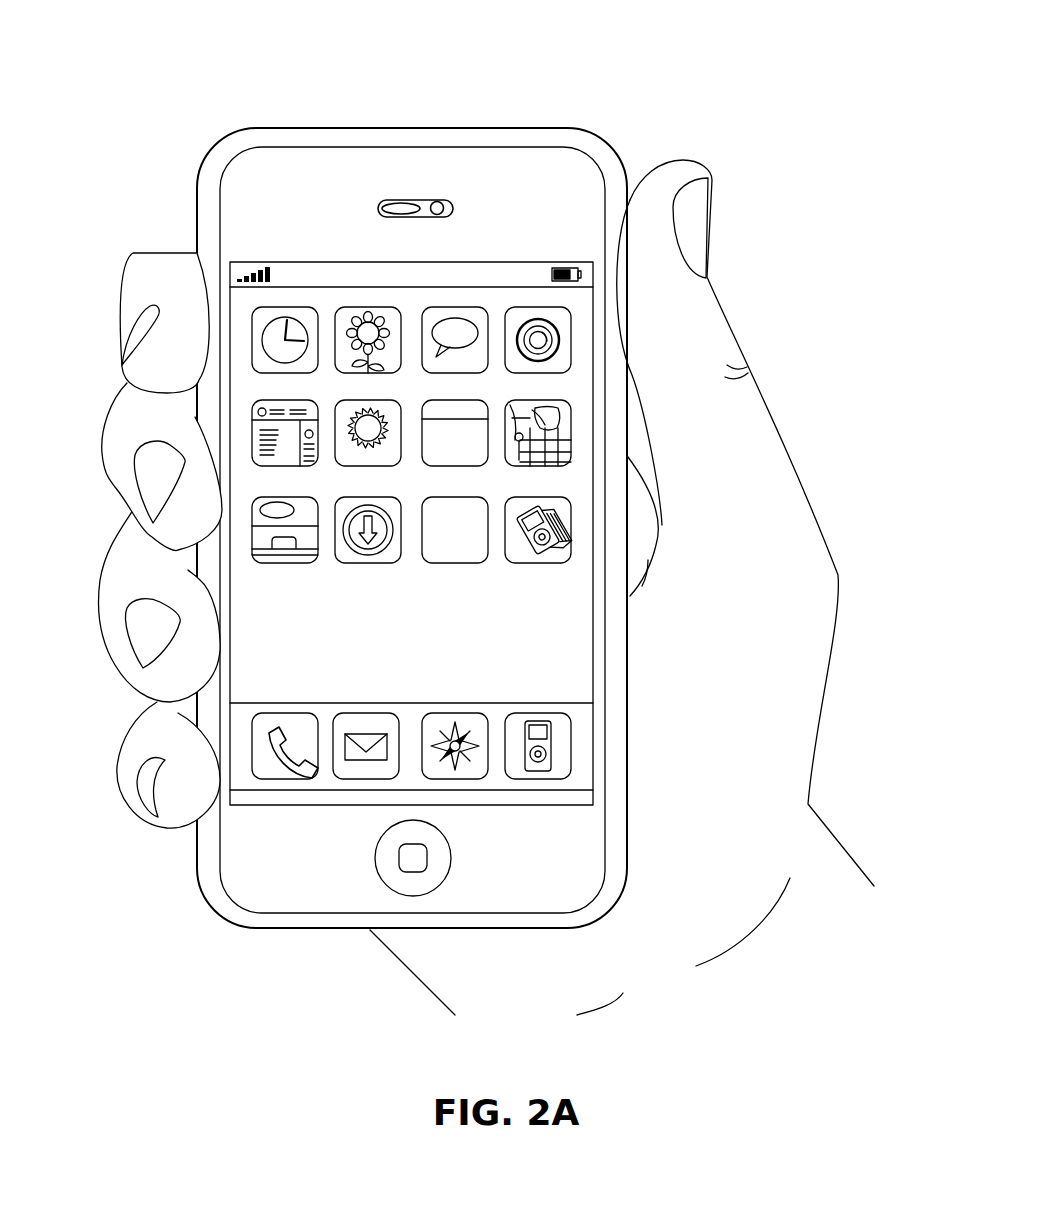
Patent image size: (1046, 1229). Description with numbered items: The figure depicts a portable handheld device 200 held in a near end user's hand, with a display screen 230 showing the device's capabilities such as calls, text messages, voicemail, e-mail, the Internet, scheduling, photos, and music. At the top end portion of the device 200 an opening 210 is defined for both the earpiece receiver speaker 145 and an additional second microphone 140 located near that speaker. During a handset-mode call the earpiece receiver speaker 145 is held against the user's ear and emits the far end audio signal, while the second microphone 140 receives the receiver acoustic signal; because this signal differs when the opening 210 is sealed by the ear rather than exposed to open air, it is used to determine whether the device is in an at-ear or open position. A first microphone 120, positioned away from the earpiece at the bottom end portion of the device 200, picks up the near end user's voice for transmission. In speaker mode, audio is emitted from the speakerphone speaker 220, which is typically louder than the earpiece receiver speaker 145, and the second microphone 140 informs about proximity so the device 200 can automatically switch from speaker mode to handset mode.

The portable handheld device 200 is at (567, 128).
The opening 210 is at (380, 203).
The earpiece receiver speaker 145 is at (398, 205).
The second microphone 140 is at (442, 204).
The display screen 230 is at (507, 292).
The speakerphone speaker 220 is at (273, 930).
The first microphone 120 is at (527, 930).